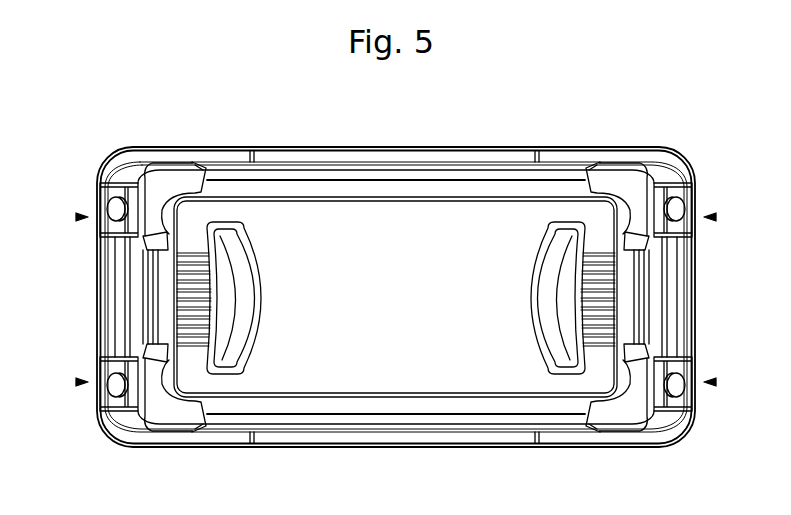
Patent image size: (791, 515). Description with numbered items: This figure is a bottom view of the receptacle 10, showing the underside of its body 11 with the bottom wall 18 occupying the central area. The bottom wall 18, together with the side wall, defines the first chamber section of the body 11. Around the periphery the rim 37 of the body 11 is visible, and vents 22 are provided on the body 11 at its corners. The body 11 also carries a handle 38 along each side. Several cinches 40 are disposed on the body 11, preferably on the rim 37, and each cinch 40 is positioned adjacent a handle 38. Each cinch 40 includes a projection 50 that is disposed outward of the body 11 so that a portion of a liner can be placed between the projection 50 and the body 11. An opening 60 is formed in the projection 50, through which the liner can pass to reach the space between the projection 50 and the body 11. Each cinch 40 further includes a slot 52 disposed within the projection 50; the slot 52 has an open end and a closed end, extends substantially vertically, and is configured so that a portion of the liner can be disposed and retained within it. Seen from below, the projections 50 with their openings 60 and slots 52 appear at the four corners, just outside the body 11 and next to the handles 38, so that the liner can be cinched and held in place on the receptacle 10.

The receptacle 10 is at (684, 134).
The body 11 is at (580, 147).
The bottom wall 18 is at (407, 342).
The vent 22 is at (166, 178).
The rim 37 is at (512, 156).
The handle 38 is at (97, 302).
The cinch 40 is at (77, 217).
The projection 50 is at (116, 378).
The slot 52 is at (100, 209).
The opening 60 is at (115, 198).